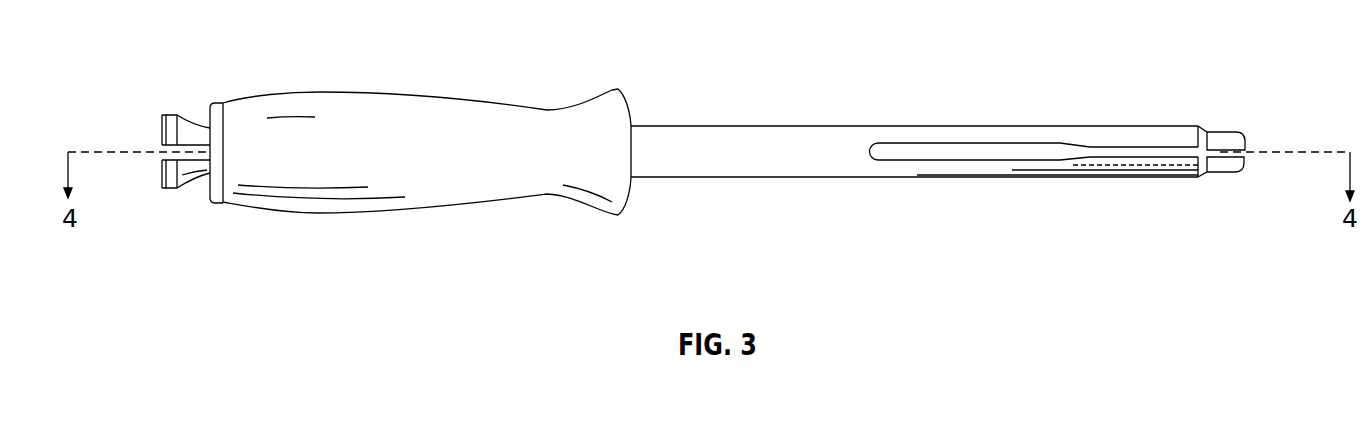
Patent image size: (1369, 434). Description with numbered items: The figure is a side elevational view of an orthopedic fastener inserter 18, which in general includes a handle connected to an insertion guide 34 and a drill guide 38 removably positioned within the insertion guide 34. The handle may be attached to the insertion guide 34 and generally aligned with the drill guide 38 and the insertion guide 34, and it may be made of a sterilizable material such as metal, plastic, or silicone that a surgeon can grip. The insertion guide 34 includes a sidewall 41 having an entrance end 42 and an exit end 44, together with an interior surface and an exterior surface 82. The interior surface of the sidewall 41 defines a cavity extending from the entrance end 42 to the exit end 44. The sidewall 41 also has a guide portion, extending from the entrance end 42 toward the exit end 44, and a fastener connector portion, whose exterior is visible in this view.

The drill guide 38 is at (188, 122).
The entrance end 42 is at (207, 183).
The orthopedic fastener inserter 18 is at (807, 125).
The sidewall 41 is at (968, 125).
The exterior surface 82 is at (1152, 125).
The insertion guide 34 is at (917, 178).
The exit end 44 is at (1247, 142).